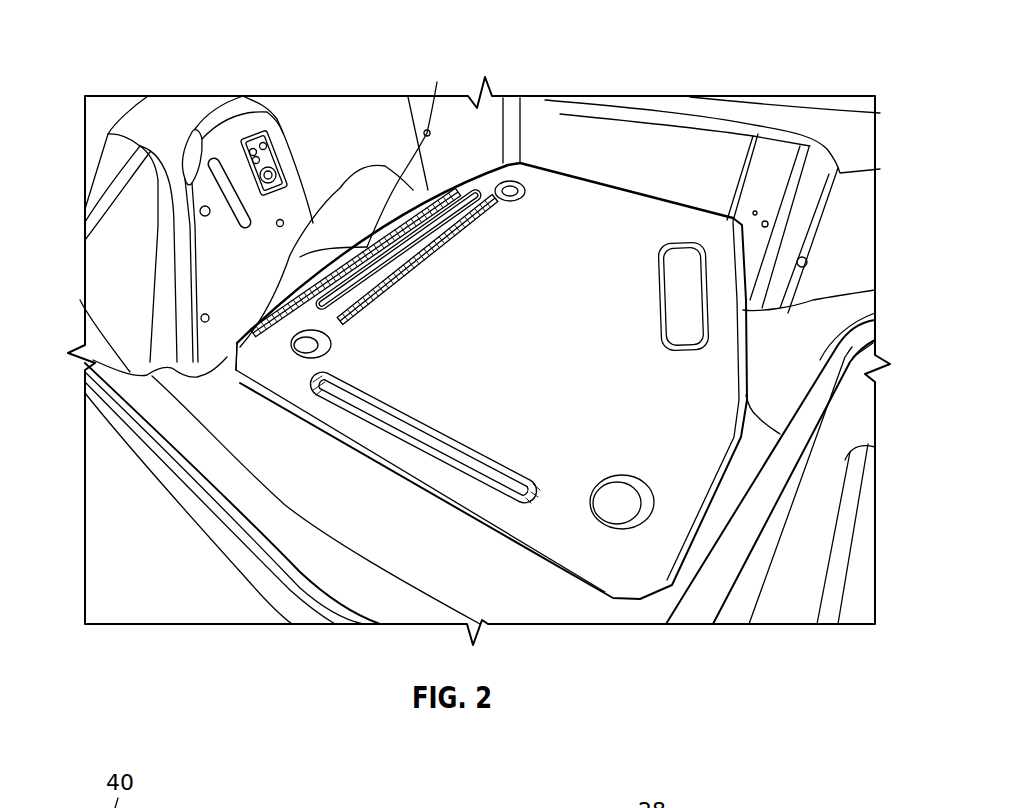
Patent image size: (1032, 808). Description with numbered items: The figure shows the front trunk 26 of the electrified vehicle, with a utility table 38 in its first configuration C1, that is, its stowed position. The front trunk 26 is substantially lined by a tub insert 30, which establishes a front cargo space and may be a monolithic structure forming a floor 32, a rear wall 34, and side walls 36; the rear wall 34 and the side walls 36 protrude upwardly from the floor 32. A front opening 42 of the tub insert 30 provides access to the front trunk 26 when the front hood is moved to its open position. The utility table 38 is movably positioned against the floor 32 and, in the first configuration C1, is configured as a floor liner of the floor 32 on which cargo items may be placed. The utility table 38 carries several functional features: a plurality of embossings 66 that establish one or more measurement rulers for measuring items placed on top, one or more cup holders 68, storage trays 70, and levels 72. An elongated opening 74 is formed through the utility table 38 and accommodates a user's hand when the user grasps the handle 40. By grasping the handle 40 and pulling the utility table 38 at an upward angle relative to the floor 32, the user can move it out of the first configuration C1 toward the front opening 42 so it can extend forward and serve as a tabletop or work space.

The front trunk 26 is at (758, 85).
The tub insert 30 is at (851, 193).
The floor 32 is at (750, 450).
The rear wall 34 is at (675, 178).
The side walls 36 is at (308, 144).
The utility table 38 is at (552, 208).
The handle 40 is at (434, 428).
The front opening 42 is at (212, 353).
The embossings 66 is at (427, 307).
The cup holders 68 is at (510, 200).
The storage trays 70 is at (433, 237).
The levels 72 is at (330, 390).
The elongated opening 74 is at (447, 457).
The first configuration C1 is at (251, 523).